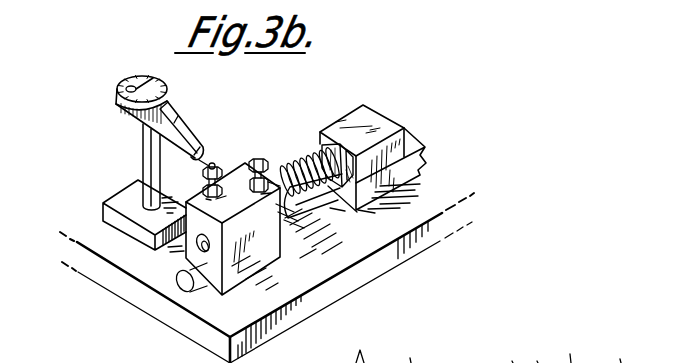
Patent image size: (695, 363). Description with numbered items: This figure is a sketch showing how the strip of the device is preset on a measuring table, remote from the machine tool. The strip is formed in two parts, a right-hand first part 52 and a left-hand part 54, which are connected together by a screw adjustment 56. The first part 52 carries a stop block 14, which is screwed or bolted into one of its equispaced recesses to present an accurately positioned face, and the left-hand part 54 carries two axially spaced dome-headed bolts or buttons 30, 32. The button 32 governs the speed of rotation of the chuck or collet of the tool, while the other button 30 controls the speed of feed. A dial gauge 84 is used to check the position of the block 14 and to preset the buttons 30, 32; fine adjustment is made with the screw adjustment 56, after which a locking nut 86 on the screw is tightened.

The stop block 14 is at (359, 117).
The adjustable stop 30 is at (214, 162).
The adjustable stop 32 is at (258, 158).
The first part 52 is at (411, 166).
The left-hand part 54 is at (276, 217).
The screw adjustment 56 is at (308, 158).
The dial gauge 84 is at (133, 76).
The locking nut 86 is at (282, 176).